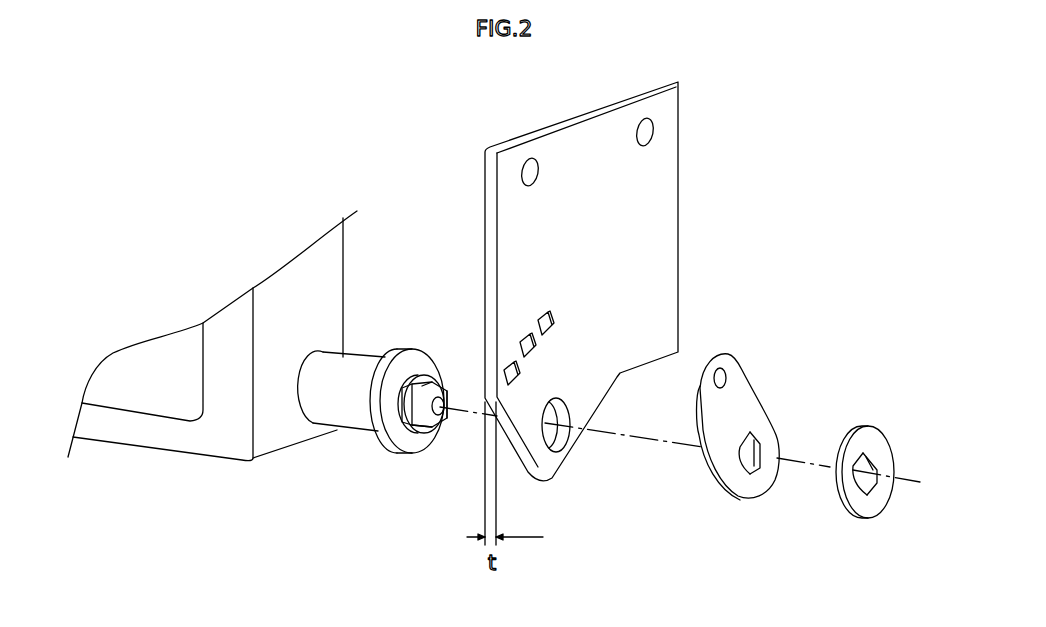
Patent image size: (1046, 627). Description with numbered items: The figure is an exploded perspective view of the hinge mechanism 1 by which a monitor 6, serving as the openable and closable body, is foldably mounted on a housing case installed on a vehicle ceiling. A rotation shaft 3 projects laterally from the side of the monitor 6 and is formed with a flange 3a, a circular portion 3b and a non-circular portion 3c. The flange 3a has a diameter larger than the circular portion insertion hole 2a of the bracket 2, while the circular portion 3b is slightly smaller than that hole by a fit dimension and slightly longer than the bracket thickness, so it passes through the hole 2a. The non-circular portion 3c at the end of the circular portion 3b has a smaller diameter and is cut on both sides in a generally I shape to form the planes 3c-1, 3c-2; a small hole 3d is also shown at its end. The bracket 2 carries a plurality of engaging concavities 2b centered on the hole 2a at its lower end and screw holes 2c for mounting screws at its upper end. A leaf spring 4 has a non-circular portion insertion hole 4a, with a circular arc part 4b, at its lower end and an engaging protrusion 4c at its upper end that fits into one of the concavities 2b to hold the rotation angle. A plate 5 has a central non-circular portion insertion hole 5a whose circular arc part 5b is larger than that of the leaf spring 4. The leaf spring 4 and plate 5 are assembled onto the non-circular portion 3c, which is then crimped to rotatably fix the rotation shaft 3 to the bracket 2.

The hinge mechanism 1 is at (366, 527).
The bracket 2 is at (663, 222).
The circular portion insertion hole 2a is at (566, 437).
The engaging concavities 2b is at (547, 312).
The screw holes 2c is at (532, 158).
The rotation shaft 3 is at (356, 410).
The flange 3a is at (396, 357).
The circular portion 3b is at (400, 453).
The non-circular portion 3c is at (437, 370).
The plane 3c-1 is at (410, 460).
The plane 3c-2 is at (447, 396).
The center hole 3d is at (447, 423).
The leaf spring 4 is at (753, 485).
The non-circular portion insertion hole 4a is at (757, 452).
The circular arc part 4b is at (743, 447).
The engaging protrusion 4c is at (728, 377).
The plate 5 is at (877, 503).
The non-circular portion insertion hole 5a is at (872, 462).
The circular arc part 5b is at (849, 430).
The monitor 6 is at (158, 436).